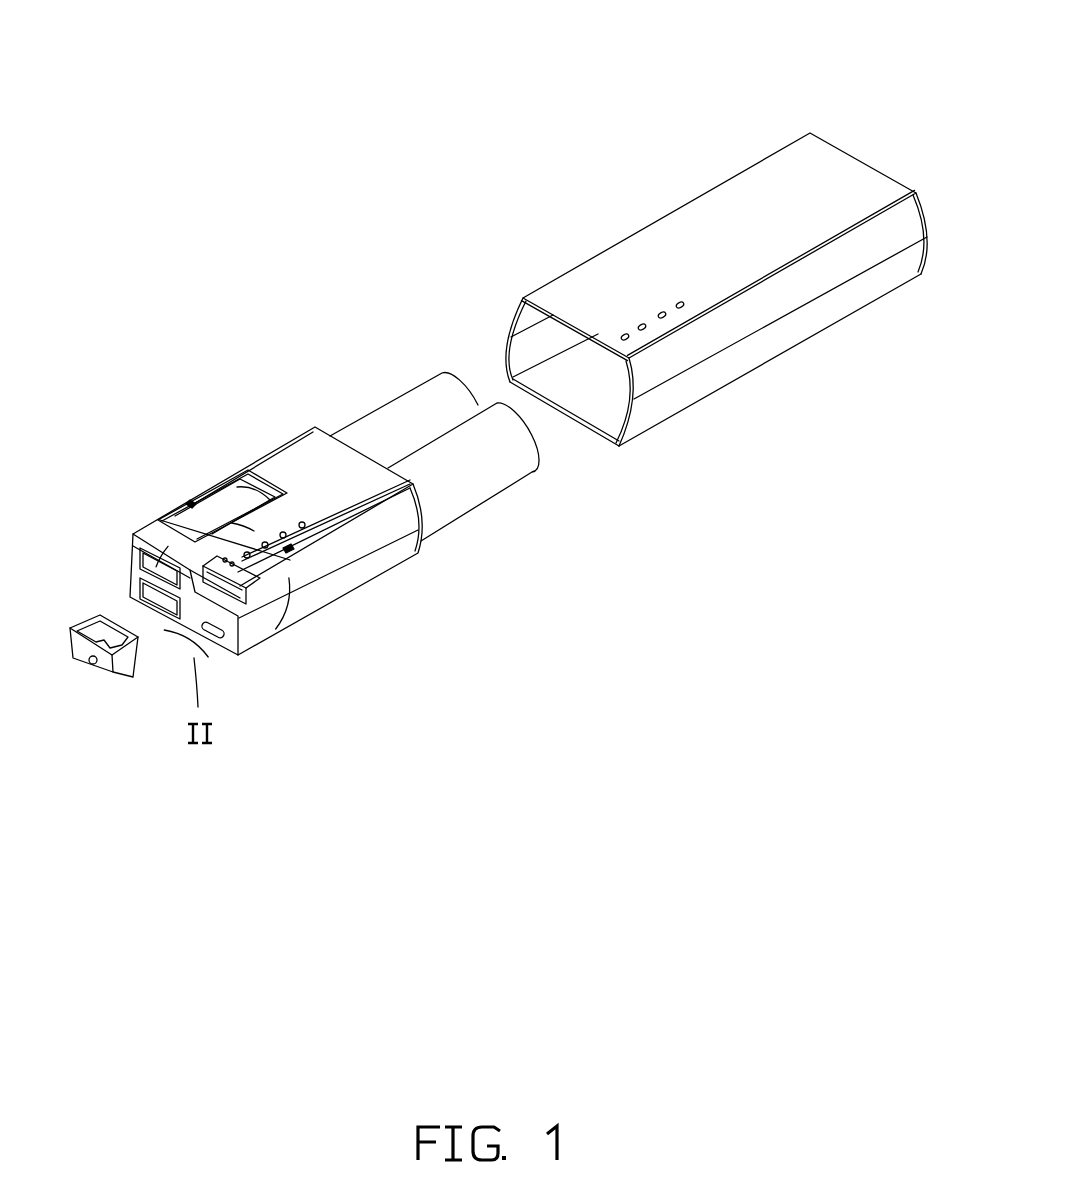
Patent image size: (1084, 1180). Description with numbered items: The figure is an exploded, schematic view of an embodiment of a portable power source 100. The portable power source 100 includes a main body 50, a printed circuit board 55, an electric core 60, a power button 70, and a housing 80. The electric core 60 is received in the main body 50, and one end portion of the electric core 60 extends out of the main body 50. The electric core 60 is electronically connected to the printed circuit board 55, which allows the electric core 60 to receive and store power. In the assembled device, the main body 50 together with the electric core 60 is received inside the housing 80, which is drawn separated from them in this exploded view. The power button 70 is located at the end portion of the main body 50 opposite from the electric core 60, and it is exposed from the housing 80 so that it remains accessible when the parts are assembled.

The portable power source 100 is at (493, 37).
The main body 50 is at (265, 445).
The printed circuit board 55 is at (225, 506).
The electric core 60 is at (407, 416).
The power button 70 is at (110, 668).
The housing 80 is at (652, 252).